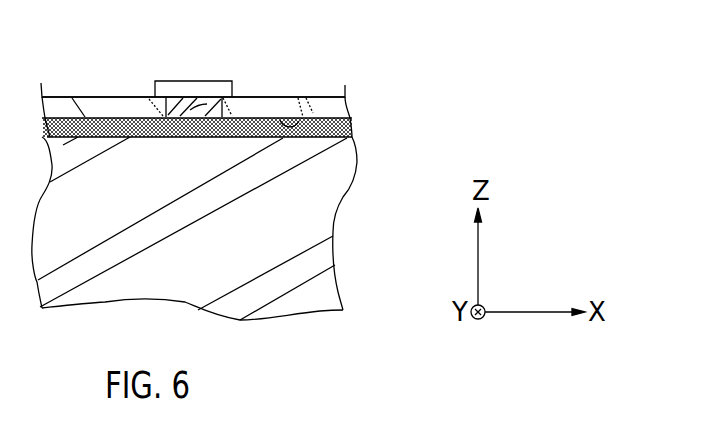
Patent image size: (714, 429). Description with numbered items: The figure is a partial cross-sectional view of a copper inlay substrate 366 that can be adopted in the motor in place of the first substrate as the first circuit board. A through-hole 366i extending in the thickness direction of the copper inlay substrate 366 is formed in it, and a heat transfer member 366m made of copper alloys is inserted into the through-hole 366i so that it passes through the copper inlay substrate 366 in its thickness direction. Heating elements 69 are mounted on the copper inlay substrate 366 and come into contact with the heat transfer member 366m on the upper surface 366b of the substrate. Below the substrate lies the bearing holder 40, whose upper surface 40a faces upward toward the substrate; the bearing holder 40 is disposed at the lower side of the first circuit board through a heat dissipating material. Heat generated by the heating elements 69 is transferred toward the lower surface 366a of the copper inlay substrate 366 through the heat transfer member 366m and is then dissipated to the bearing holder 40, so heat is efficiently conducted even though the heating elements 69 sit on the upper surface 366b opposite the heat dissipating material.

The bearing holder 40 is at (326, 197).
The upper surface 40a is at (350, 128).
The copper inlay substrate 366 is at (328, 97).
The lower surface 366a is at (298, 97).
The upper surface 366b is at (110, 96).
The through-hole 366i is at (185, 97).
The heat transfer member 366m is at (205, 106).
The heating elements 69 is at (190, 90).